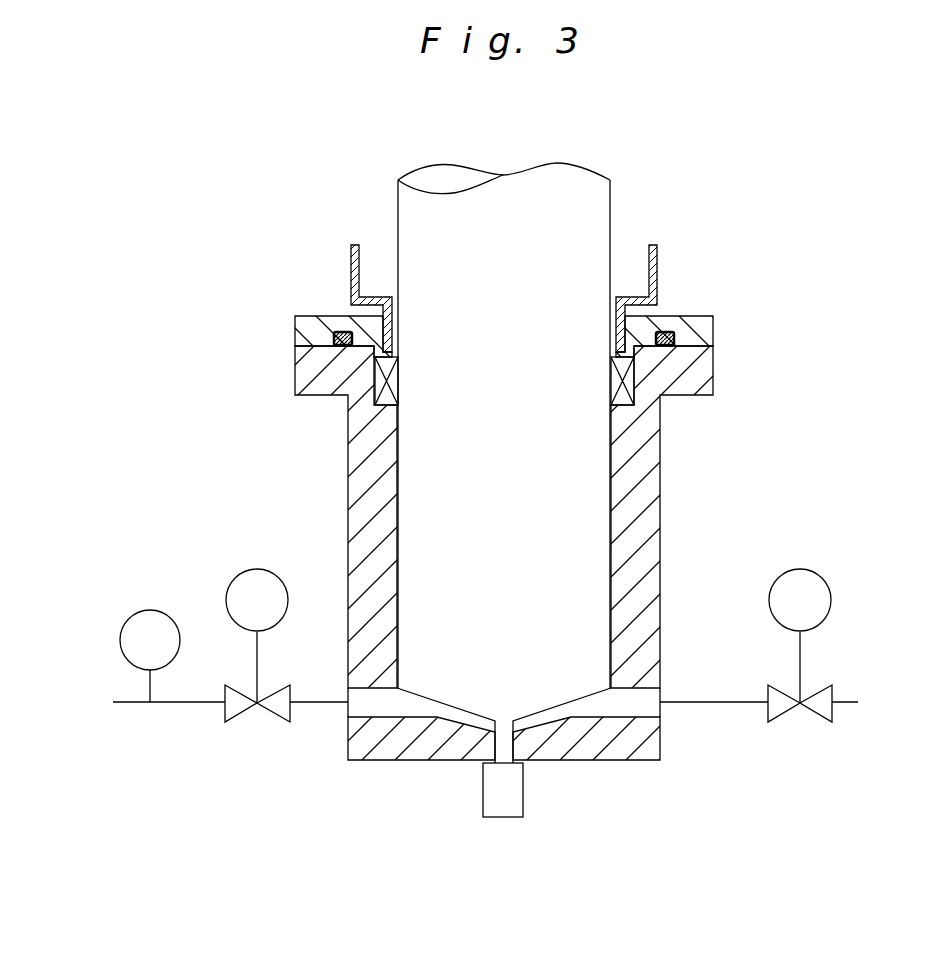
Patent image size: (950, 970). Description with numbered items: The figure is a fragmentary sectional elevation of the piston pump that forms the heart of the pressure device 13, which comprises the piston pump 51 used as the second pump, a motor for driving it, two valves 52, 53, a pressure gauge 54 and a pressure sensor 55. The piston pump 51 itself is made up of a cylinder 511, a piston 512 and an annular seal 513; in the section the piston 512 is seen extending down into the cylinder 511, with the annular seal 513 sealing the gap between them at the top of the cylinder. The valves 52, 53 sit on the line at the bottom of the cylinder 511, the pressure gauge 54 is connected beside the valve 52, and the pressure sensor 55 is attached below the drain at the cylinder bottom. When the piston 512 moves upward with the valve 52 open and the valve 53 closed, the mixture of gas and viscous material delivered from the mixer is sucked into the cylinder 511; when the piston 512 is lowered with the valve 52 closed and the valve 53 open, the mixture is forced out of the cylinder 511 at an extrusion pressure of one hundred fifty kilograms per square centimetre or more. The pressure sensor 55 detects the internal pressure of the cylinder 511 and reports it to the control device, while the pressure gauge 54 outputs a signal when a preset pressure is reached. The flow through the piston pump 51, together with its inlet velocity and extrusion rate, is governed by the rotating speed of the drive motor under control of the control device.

The pressure device 13 is at (300, 173).
The piston pump 51 is at (660, 507).
The cylinder 511 is at (652, 580).
The piston 512 is at (595, 197).
The annular seal 513 is at (627, 403).
The valve 52 is at (243, 713).
The valve 53 is at (813, 713).
The pressure gauge 54 is at (150, 609).
The pressure sensor 55 is at (487, 818).